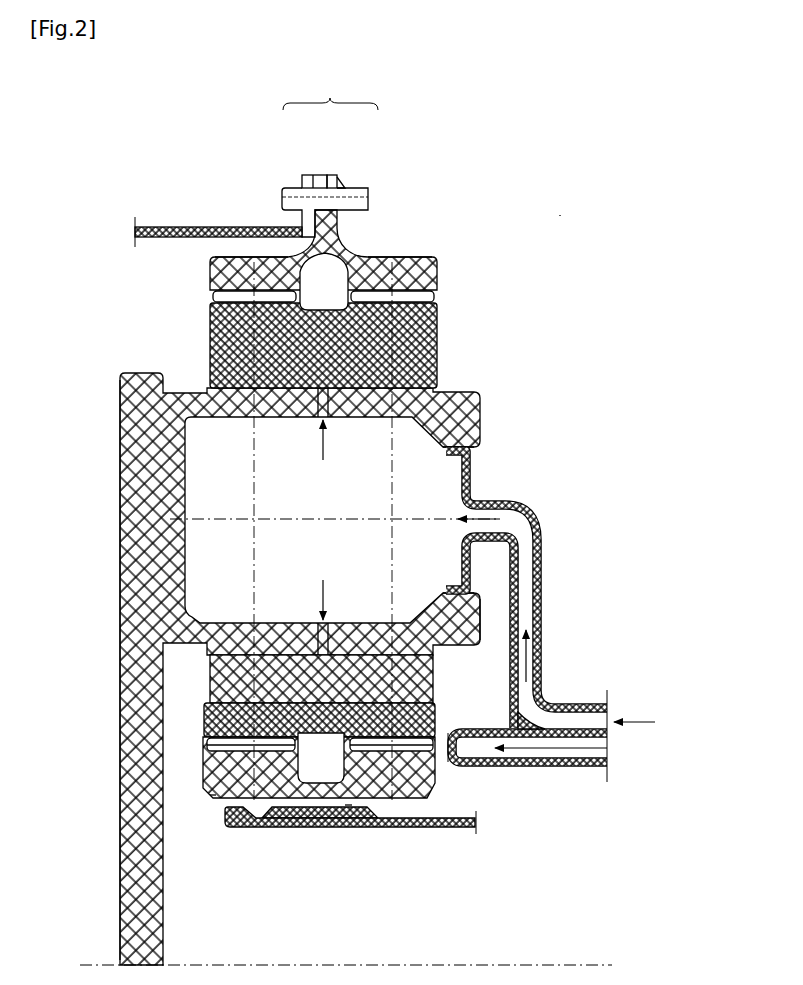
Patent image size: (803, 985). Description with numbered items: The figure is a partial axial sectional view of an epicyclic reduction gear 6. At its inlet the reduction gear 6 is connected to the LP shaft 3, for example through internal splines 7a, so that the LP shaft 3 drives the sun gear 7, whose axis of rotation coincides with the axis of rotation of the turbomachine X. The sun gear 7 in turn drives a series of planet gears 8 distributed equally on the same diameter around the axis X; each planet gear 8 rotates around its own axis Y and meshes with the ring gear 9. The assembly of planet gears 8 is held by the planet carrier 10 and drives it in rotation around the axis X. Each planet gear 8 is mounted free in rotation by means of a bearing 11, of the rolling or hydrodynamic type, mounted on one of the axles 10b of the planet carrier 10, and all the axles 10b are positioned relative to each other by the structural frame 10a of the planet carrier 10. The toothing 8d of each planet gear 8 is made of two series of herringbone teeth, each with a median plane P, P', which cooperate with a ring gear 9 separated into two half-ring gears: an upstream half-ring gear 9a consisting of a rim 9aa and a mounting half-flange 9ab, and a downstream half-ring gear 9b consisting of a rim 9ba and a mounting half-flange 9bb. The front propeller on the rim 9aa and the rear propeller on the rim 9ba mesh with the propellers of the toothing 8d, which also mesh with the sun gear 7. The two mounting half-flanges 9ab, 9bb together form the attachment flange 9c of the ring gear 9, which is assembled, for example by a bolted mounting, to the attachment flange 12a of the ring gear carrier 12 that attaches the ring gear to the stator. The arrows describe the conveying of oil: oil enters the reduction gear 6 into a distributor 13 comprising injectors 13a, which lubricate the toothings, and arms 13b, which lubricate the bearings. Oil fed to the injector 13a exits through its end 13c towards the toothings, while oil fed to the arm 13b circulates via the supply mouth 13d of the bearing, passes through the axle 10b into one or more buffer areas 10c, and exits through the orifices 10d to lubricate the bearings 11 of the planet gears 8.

The LP shaft 3 is at (444, 828).
The epicyclic reduction gear 6 is at (603, 236).
The sun gear 7 is at (210, 768).
The internal splines 7a is at (302, 817).
The planet gear 8 is at (212, 727).
The toothing of the planet gear 8d is at (208, 746).
The ring gear 9 is at (306, 183).
The upstream half-ring gear 9a is at (215, 276).
The downstream half-ring gear 9b is at (433, 277).
The rim of the upstream half-ring gear 9aa is at (237, 267).
The rim of the downstream half-ring gear 9ba is at (383, 268).
The mounting half-flange of the upstream half-ring gear 9ab is at (318, 176).
The mounting half-flange of the downstream half-ring gear 9bb is at (333, 176).
The attachment flange of the ring gear 9c is at (330, 98).
The planet carrier 10 is at (480, 392).
The structural frame of the planet carrier 10a is at (137, 485).
The axle of the planet carrier 10b is at (468, 627).
The buffer area 10c is at (246, 571).
The orifice 10d is at (470, 410).
The bearing 11 is at (437, 352).
The ring gear carrier 12 is at (172, 226).
The attachment flange of the ring gear carrier 12a is at (305, 178).
The distributor 13 is at (580, 641).
The injector 13a is at (557, 766).
The arm 13b is at (542, 584).
The end of the injector 13c is at (456, 757).
The supply mouth of the bearing 13d is at (470, 458).
The median plane P is at (134, 851).
The median plane P' is at (330, 852).
The axis of rotation of the turbomachine X is at (590, 965).
The axis of the planet gear Y is at (476, 497).